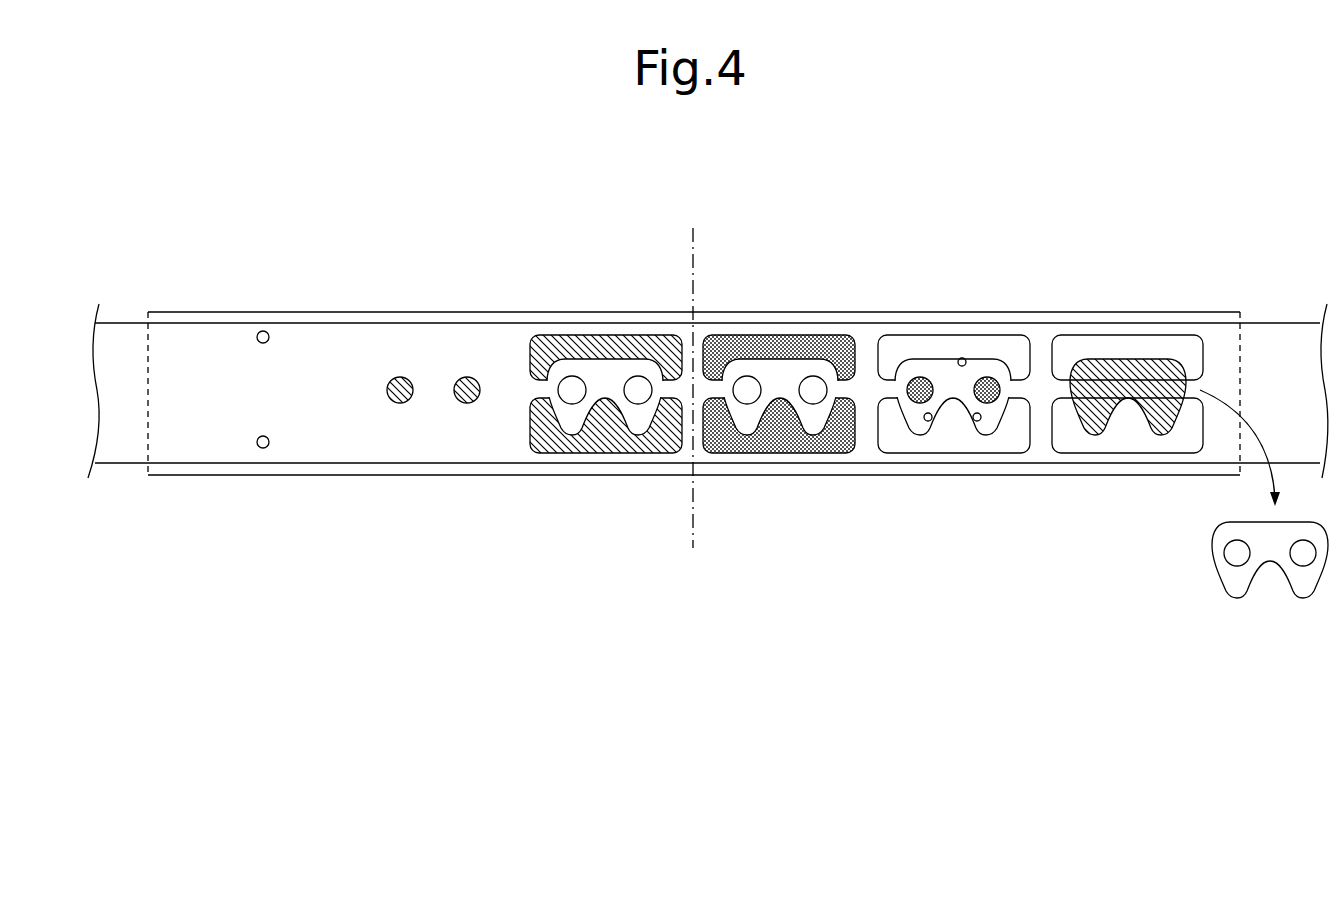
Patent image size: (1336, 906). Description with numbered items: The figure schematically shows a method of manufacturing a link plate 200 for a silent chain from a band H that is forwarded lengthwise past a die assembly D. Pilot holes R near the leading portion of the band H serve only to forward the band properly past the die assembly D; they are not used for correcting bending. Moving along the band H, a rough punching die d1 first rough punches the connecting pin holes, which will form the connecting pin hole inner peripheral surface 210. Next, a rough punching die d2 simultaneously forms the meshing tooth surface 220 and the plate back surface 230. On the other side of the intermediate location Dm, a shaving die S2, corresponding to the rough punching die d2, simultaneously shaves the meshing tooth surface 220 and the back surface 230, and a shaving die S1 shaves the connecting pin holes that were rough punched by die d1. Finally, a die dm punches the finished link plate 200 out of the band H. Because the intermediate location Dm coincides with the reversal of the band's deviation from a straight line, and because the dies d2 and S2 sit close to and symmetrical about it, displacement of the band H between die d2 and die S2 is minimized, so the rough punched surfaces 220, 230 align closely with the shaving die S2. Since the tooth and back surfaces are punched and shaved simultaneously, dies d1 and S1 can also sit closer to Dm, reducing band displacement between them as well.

The band H is at (113, 463).
The die assembly D is at (187, 475).
The pilot holes R is at (263, 331).
The rough punching die for connecting pin holes d1 is at (466, 377).
The rough punching die for meshing tooth surface and back surface d2 is at (617, 340).
The intermediate location Dm is at (693, 364).
The connecting pin hole inner peripheral surface 210 is at (811, 376).
The shaving die for meshing tooth surface and back surface S2 is at (823, 340).
The meshing tooth surface 220 is at (975, 421).
The shaving die for connecting pin holes S1 is at (918, 376).
The back surface 230 is at (962, 358).
The final punching die dm is at (1128, 360).
The link plate 200 is at (1218, 571).